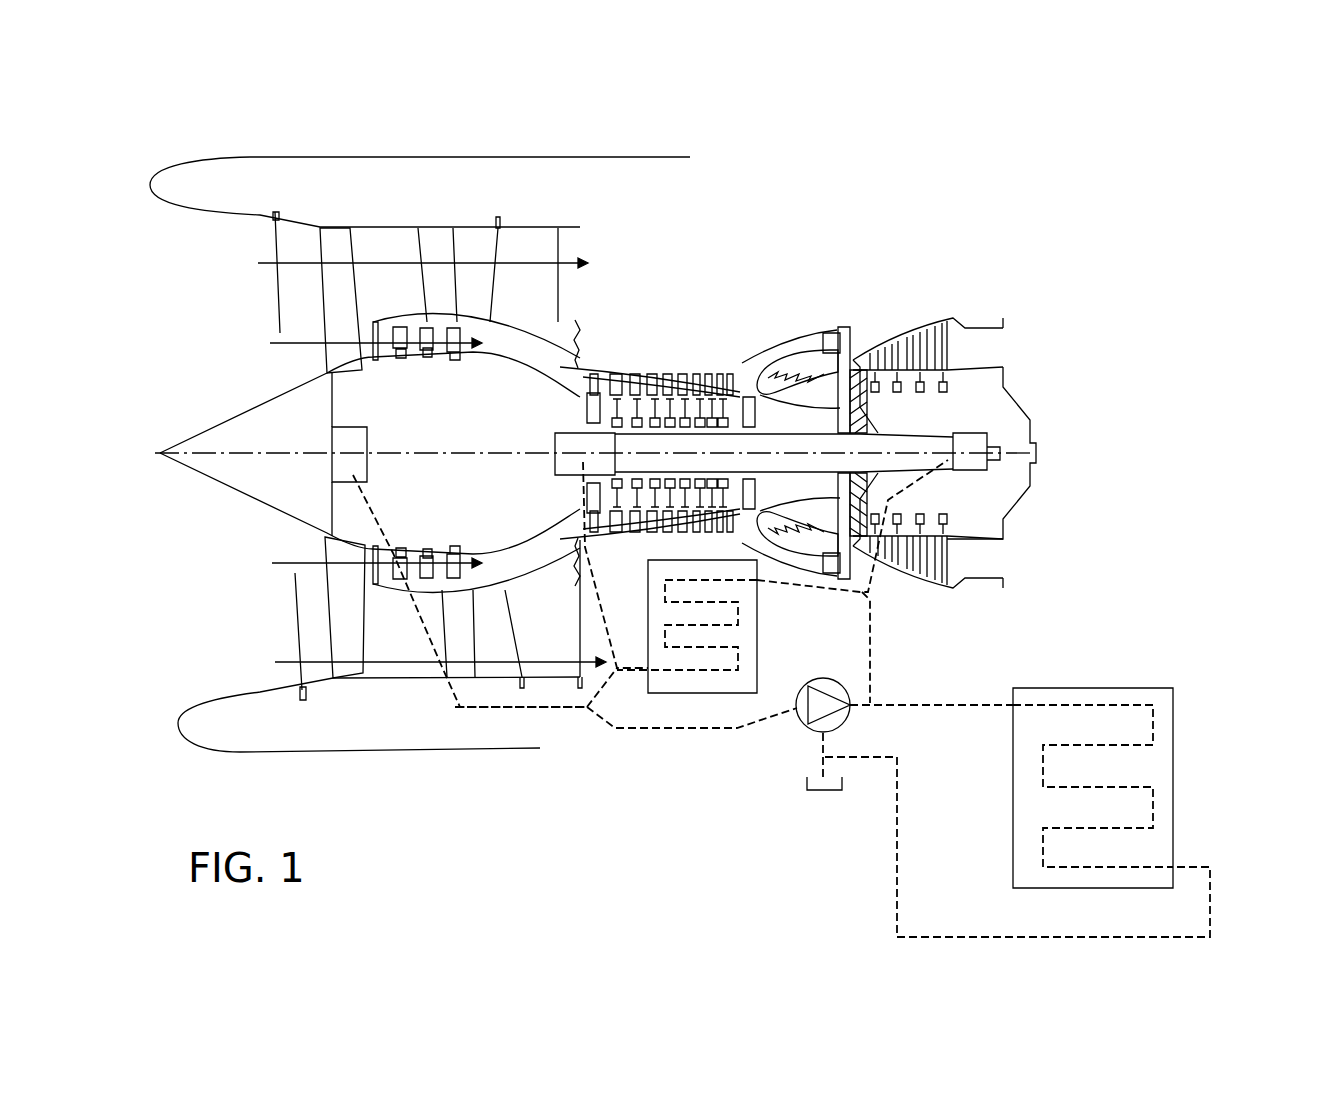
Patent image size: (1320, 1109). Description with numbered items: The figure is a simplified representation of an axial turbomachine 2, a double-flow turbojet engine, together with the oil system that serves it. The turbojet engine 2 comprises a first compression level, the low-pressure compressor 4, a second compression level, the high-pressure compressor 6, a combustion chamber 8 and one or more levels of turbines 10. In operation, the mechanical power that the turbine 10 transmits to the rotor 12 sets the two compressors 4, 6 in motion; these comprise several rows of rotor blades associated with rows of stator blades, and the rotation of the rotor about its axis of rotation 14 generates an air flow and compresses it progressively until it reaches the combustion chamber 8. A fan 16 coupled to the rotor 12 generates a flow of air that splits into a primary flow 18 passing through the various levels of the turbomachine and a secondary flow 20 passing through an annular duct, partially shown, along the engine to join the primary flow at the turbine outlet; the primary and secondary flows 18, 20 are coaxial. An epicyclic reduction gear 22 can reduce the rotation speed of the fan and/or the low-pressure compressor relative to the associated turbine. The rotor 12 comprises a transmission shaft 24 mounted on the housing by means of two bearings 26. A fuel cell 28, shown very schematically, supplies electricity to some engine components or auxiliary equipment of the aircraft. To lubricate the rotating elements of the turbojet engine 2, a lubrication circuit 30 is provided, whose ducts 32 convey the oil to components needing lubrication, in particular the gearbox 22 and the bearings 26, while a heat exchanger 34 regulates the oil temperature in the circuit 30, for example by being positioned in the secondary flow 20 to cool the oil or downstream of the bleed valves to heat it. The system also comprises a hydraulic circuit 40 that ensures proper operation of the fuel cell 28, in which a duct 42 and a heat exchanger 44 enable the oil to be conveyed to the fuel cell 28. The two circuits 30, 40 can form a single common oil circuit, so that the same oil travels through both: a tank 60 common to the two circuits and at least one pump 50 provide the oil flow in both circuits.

The axial turbomachine 2 is at (722, 202).
The low-pressure compressor 4 is at (396, 360).
The high-pressure compressor 6 is at (640, 374).
The combustion chamber 8 is at (806, 368).
The turbine 10 is at (930, 365).
The rotor 12 is at (884, 437).
The axis of rotation 14 is at (465, 450).
The fan 16 is at (343, 290).
The primary flow 18 is at (359, 453).
The secondary flow 20 is at (416, 462).
The epicyclic reduction gear 22 is at (352, 470).
The transmission shaft 24 is at (738, 440).
The bearings 26 is at (557, 467).
The fuel cell 28 is at (1170, 770).
The lubrication circuit 30 is at (642, 764).
The ducts 32 is at (603, 605).
The heat exchanger 34 is at (693, 684).
The hydraulic circuit 40 is at (1073, 672).
The duct 42 is at (958, 706).
The heat exchanger 44 is at (1043, 842).
The pump 50 is at (800, 716).
The tank 60 is at (822, 792).